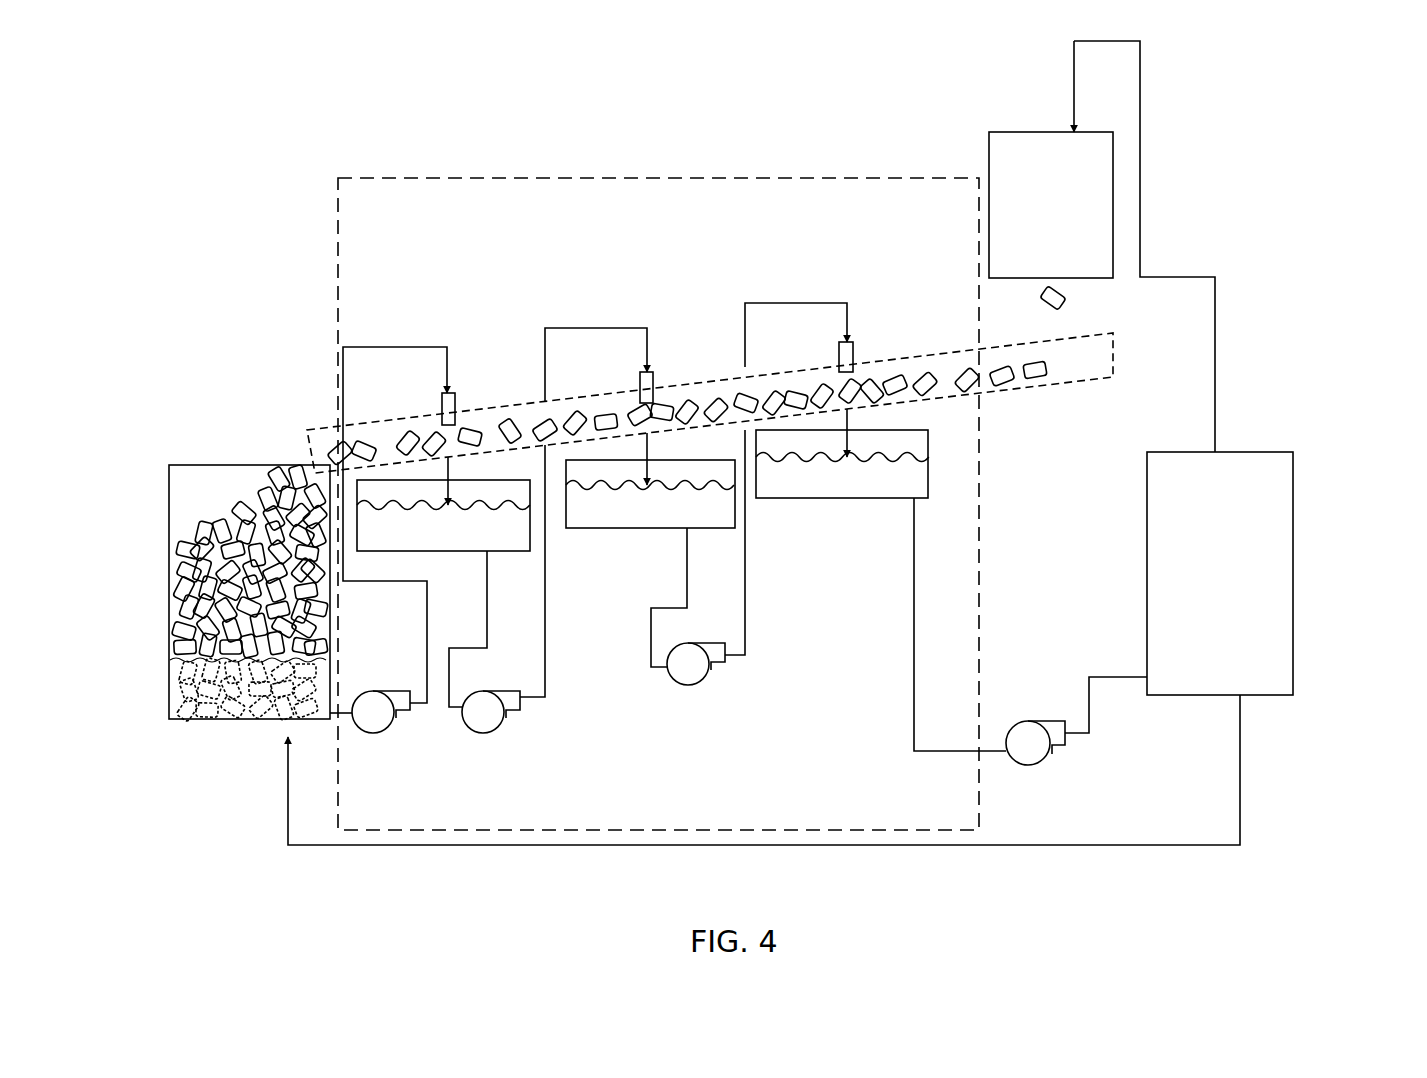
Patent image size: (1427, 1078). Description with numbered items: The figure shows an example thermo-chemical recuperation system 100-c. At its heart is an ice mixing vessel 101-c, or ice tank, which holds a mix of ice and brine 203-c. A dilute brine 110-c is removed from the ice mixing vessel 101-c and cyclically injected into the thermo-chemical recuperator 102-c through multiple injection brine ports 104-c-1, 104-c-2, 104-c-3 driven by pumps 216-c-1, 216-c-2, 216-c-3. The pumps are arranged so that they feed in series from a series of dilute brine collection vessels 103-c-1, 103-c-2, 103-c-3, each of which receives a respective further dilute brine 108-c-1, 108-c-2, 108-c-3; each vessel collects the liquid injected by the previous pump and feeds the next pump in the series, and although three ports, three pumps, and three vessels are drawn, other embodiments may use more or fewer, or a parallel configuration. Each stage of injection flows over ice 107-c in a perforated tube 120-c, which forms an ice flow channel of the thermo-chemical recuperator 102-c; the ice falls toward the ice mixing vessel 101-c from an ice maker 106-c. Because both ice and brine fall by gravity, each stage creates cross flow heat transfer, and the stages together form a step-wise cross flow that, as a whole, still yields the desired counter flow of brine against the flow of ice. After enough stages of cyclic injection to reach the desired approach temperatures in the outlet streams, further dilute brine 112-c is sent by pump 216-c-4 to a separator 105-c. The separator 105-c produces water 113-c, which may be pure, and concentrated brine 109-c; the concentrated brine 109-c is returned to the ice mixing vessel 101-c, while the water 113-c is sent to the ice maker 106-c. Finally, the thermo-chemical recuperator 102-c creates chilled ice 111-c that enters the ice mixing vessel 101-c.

The thermo-chemical recuperation system 100-c is at (1319, 108).
The ice mixing vessel 101-c is at (170, 502).
The thermo-chemical recuperator 102-c is at (551, 830).
The dilute brine collection vessel 103-c-1 is at (468, 551).
The dilute brine collection vessel 103-c-2 is at (650, 528).
The dilute brine collection vessel 103-c-3 is at (870, 498).
The injection brine port 104-c-1 is at (455, 408).
The injection brine port 104-c-2 is at (653, 385).
The injection brine port 104-c-3 is at (853, 355).
The separator 105-c is at (1265, 695).
The ice maker 106-c is at (1022, 132).
The ice 107-c is at (1040, 298).
The further dilute brine 108-c-1 is at (447, 505).
The further dilute brine 108-c-2 is at (650, 485).
The further dilute brine 108-c-3 is at (847, 455).
The concentrated brine 109-c is at (510, 845).
The dilute brine 110-c is at (357, 347).
The chilled ice 111-c is at (340, 452).
The further dilute brine 112-c is at (1091, 703).
The water 113-c is at (1215, 372).
The perforated tube 120-c is at (1020, 388).
The mix of ice and brine 203-c is at (205, 700).
The pump 216-c-1 is at (387, 726).
The pump 216-c-2 is at (498, 727).
The pump 216-c-3 is at (703, 679).
The pump 216-c-4 is at (1043, 722).